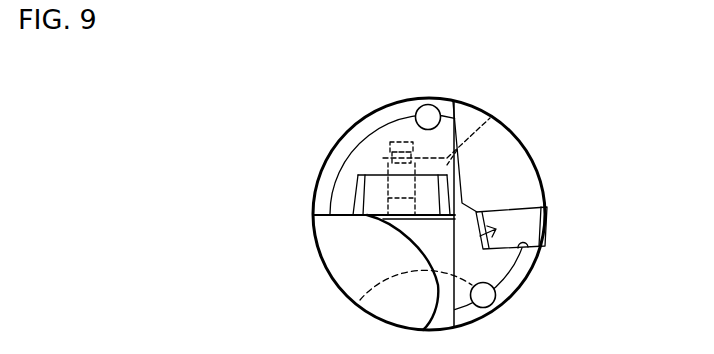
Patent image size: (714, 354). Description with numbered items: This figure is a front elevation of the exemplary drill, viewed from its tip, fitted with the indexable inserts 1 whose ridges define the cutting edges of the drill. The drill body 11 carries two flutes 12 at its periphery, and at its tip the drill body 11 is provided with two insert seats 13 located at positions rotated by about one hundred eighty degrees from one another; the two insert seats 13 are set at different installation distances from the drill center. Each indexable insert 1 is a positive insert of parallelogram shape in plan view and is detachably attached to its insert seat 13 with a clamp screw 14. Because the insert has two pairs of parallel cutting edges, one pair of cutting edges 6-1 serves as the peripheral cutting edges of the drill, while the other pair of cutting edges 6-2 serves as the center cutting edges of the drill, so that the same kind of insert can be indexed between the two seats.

The indexable insert 1 is at (488, 236).
The peripheral cutting edge 6-1 is at (517, 210).
The center cutting edge 6-2 is at (398, 215).
The drill body 11 is at (388, 117).
The flute 12 is at (333, 230).
The insert seat 13 is at (357, 177).
The clamp screw 14 is at (383, 157).